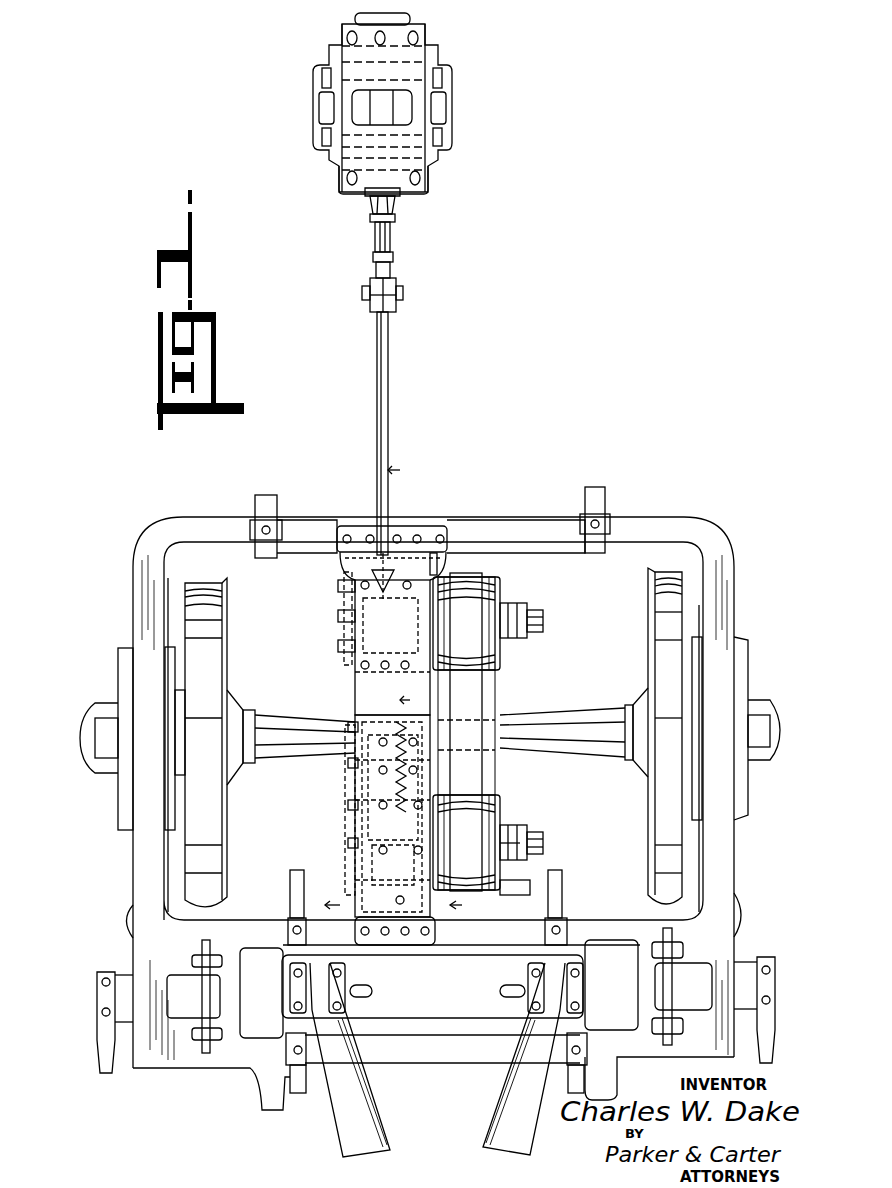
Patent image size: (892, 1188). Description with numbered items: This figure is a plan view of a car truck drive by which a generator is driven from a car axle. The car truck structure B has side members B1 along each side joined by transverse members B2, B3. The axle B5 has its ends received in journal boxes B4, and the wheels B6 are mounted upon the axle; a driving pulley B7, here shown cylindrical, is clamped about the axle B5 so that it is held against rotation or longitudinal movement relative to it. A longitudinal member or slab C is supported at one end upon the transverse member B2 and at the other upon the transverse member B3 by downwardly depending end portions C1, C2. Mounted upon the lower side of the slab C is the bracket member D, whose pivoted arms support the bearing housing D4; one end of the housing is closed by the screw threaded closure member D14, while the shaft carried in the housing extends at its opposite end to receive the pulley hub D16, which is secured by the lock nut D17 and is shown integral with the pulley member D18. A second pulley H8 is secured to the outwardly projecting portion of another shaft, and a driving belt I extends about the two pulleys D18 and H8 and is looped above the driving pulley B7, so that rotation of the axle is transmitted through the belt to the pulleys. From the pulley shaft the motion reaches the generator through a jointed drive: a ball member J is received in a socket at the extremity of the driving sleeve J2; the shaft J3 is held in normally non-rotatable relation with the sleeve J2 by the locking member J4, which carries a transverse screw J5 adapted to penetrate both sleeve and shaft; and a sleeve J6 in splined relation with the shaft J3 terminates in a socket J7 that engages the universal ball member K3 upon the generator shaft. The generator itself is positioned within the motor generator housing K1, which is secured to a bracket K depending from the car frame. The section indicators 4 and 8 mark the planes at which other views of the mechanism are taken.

The bracket K is at (330, 122).
The motor generator housing K1 is at (430, 148).
The universal ball member K3 is at (395, 200).
The socket J7 is at (370, 218).
The sleeve J6 is at (375, 240).
The shaft J3 is at (373, 266).
The transverse screw J5 is at (403, 292).
The locking member J4 is at (393, 308).
The driving sleeve J2 is at (377, 378).
The ball member J is at (385, 522).
The section line 8 is at (394, 577).
The section line 4 is at (389, 901).
The car truck structure B is at (140, 605).
The wheels B6 is at (210, 590).
The transverse member B3 is at (520, 520).
The side members B1 is at (135, 880).
The axle B5 is at (572, 722).
The driving pulley B7 is at (120, 700).
The journal boxes B4 is at (752, 698).
The downwardly depending end portion C2 is at (378, 545).
The longitudinal member or slab C is at (355, 703).
The downwardly depending end portion C1 is at (412, 960).
The bracket member D is at (362, 782).
The closure member D14 is at (372, 830).
The bearing housing D4 is at (428, 560).
The driving belt I is at (462, 580).
The pulley H8 is at (480, 585).
The lock nut D17 is at (540, 838).
The pulley hub D16 is at (535, 850).
The transverse member B2 is at (530, 885).
The pulley member D18 is at (500, 905).